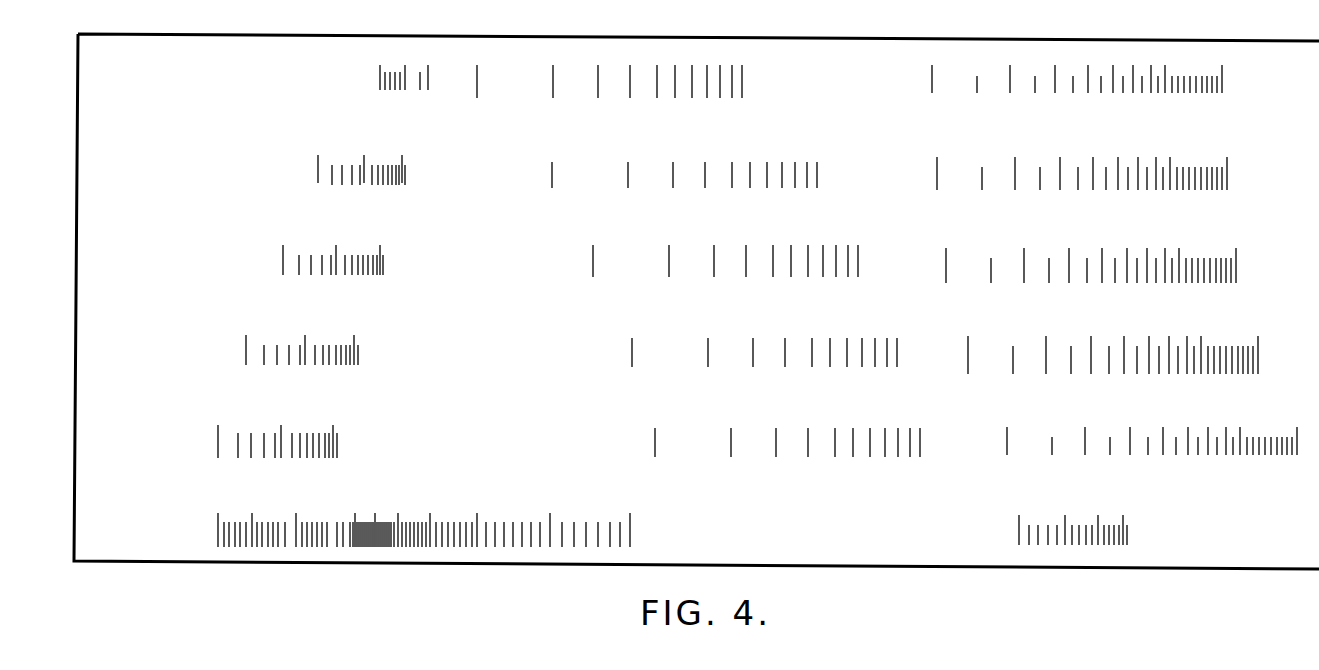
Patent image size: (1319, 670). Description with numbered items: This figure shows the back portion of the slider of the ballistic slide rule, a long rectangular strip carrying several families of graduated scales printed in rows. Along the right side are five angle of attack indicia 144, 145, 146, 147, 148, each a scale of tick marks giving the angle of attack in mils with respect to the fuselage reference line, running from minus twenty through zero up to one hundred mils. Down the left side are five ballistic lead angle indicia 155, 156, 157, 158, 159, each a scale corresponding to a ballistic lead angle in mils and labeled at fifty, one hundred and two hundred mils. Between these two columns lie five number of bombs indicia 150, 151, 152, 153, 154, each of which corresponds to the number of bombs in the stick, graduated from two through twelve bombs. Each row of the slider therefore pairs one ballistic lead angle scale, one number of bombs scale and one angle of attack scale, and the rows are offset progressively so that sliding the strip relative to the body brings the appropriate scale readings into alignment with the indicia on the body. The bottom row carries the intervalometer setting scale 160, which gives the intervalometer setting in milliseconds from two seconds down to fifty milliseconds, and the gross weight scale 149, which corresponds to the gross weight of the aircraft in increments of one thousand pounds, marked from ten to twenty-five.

The angle of attack indicia 144 is at (918, 93).
The angle of attack indicia 145 is at (927, 193).
The angle of attack indicia 146 is at (940, 278).
The angle of attack indicia 147 is at (962, 371).
The angle of attack indicia 148 is at (1000, 460).
The gross weight scale 149 is at (1008, 549).
The number of bombs indicia 150 is at (537, 130).
The number of bombs indicia 151 is at (537, 189).
The number of bombs indicia 152 is at (577, 283).
The number of bombs indicia 153 is at (618, 369).
The number of bombs indicia 154 is at (642, 462).
The ballistic lead angle indicia 155 is at (358, 93).
The ballistic lead angle indicia 156 is at (305, 186).
The ballistic lead angle indicia 157 is at (268, 275).
The ballistic lead angle indicia 158 is at (238, 366).
The ballistic lead angle indicia 159 is at (205, 458).
The intervalometer setting scale 160 is at (205, 547).